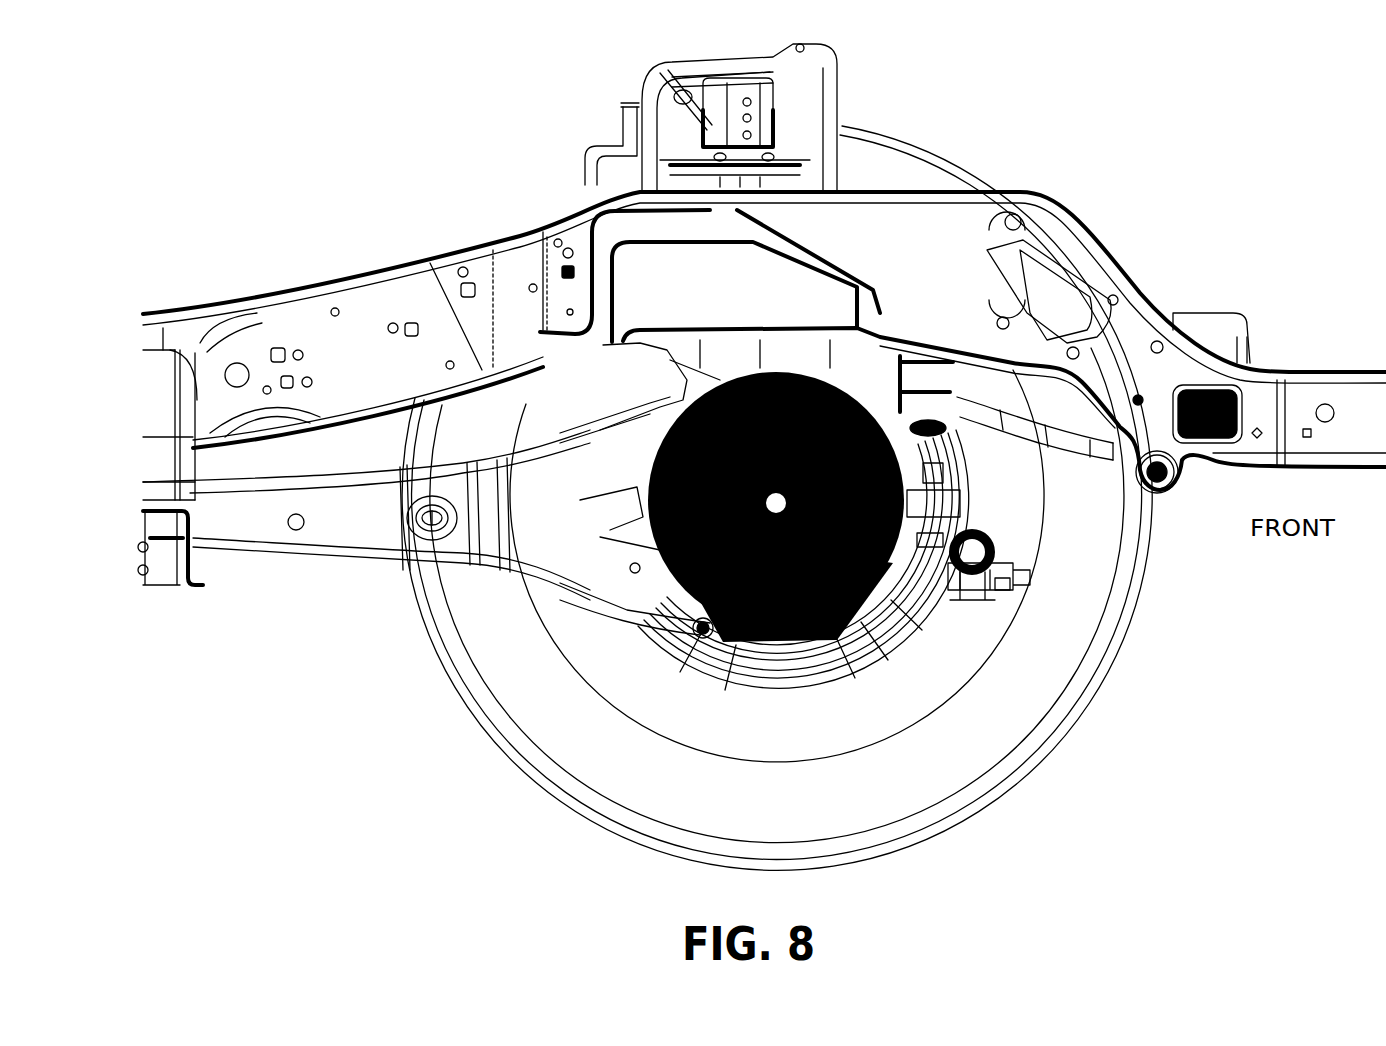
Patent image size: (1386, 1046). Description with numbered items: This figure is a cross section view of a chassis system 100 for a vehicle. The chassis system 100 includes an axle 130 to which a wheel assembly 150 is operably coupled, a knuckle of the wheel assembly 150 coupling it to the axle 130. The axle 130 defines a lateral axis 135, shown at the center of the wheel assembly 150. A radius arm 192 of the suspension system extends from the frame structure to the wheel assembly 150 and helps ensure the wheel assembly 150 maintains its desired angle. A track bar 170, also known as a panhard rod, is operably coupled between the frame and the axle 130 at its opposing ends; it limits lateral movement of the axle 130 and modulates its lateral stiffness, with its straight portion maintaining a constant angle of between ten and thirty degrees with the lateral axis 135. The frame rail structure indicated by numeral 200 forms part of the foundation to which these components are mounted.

The chassis system 100 is at (282, 110).
The frame rail 200 is at (312, 275).
The radius arm 192 is at (273, 540).
The wheel assembly 150 is at (474, 713).
The lateral axis 135 is at (781, 512).
The axle 130 is at (883, 613).
The track bar 170 is at (995, 557).